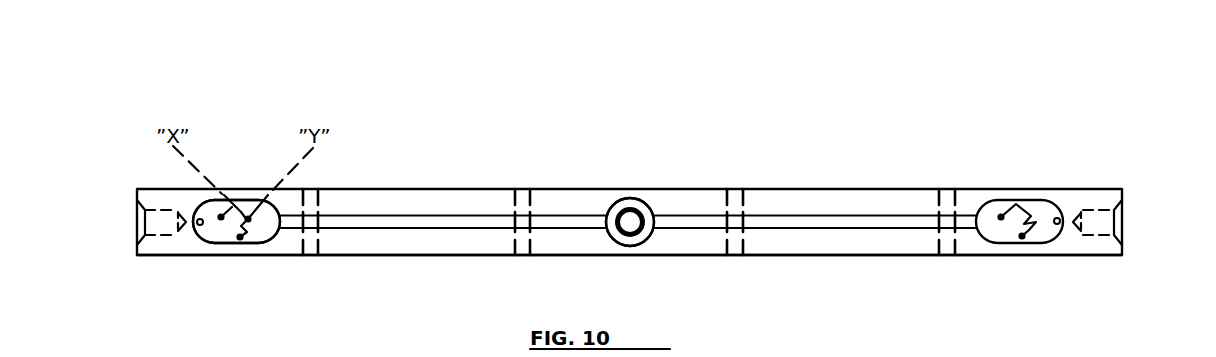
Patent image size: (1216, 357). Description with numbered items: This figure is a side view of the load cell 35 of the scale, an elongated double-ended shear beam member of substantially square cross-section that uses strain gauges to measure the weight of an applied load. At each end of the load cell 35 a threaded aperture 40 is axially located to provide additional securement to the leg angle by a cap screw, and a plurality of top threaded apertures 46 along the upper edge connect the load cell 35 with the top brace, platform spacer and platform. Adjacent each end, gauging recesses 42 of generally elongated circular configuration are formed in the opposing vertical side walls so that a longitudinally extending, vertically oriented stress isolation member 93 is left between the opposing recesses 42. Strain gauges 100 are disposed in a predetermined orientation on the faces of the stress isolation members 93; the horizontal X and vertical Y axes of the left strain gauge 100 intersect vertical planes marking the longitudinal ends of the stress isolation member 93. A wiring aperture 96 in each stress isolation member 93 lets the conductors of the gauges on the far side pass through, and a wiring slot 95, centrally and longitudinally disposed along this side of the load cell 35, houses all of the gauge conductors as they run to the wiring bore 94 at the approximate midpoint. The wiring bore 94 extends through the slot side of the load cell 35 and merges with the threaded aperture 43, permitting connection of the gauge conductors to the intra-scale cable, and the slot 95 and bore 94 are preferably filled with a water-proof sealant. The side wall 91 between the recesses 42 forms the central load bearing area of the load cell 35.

The load cell 35 is at (887, 110).
The threaded aperture 40 is at (137, 223).
The gauging recess 42 is at (278, 244).
The threaded aperture 43 is at (628, 198).
The top threaded apertures 46 is at (527, 189).
The body wall 91 is at (819, 200).
The stress isolation member 93 is at (211, 240).
The wiring bore 94 is at (646, 237).
The wiring slot 95 is at (440, 223).
The wiring aperture 96 is at (207, 244).
The strain gauge 100 is at (244, 240).